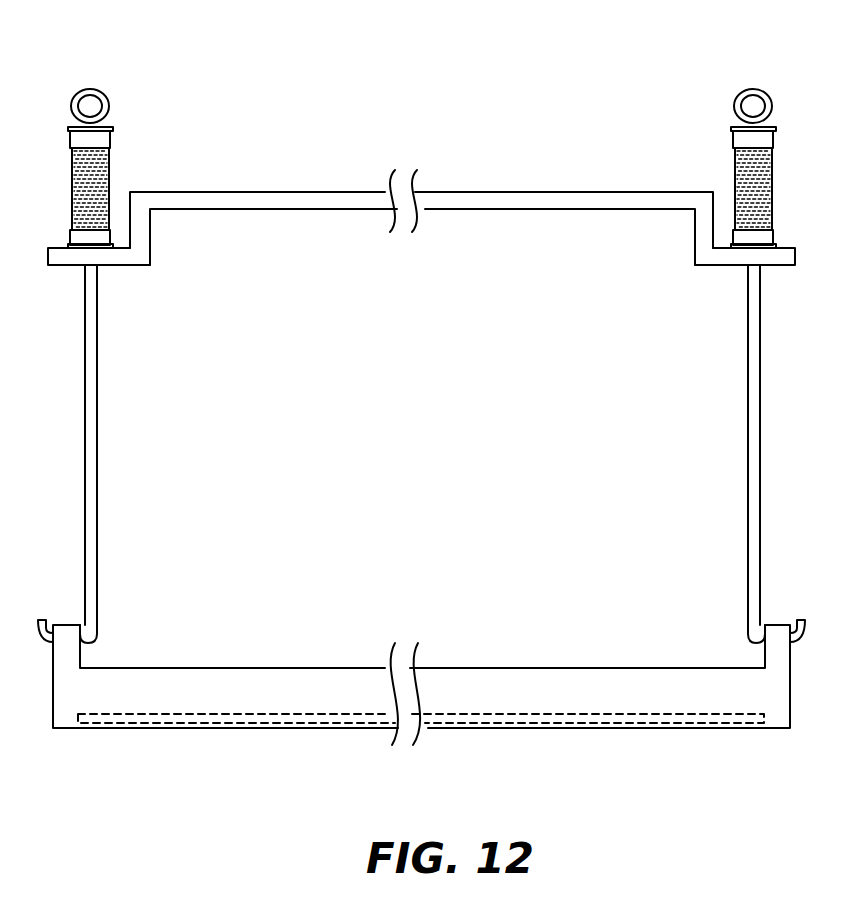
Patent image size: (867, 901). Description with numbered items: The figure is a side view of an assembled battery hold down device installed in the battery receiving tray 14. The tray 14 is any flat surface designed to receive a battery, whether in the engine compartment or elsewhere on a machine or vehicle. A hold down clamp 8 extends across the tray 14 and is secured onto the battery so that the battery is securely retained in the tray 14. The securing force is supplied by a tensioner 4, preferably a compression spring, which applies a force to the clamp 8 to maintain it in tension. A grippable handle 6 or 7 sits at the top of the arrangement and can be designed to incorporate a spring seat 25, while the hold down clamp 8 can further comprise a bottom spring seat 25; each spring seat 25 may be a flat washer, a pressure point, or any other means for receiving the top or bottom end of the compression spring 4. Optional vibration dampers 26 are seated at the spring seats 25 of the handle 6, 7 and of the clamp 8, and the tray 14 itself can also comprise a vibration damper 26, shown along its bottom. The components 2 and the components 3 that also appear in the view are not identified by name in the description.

The tube 2 is at (98, 405).
The cylinder 3 is at (112, 175).
The tensioner 4 is at (90, 173).
The grippable handle 6 is at (438, 73).
The grippable handle 7 is at (112, 120).
The hold down clamp 8 is at (295, 192).
The battery receiving tray 14 is at (255, 688).
The spring seat 25 is at (112, 130).
The vibration damper 26 is at (75, 142).